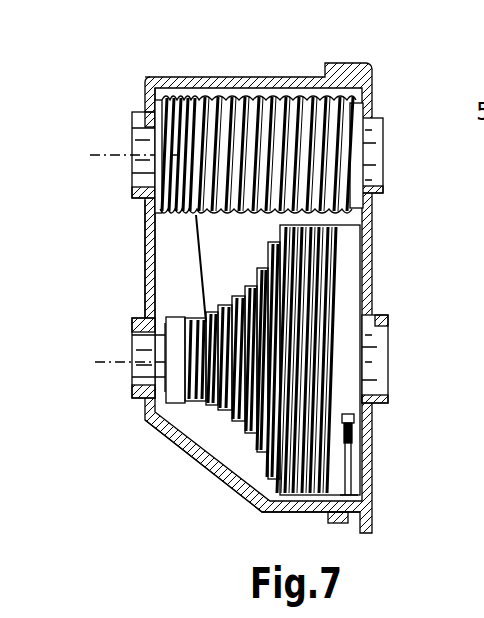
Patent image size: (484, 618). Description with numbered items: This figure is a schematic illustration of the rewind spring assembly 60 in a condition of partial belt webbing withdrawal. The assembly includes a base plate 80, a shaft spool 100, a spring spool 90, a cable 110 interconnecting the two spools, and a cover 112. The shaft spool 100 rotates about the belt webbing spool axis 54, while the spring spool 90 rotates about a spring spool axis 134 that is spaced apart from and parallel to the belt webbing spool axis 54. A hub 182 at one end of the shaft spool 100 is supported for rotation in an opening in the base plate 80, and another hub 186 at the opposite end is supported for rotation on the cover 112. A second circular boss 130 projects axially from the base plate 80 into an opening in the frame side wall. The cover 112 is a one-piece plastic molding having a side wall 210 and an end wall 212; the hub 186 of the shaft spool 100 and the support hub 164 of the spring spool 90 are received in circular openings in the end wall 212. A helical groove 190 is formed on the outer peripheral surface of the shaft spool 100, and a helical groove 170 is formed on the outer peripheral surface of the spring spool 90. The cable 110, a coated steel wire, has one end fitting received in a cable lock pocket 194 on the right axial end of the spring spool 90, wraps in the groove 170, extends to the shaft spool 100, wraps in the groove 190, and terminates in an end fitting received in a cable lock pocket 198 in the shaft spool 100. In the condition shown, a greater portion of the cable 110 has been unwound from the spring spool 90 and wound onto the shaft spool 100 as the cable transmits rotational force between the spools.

The belt webbing spool axis 54 is at (97, 163).
The rewind spring assembly 60 is at (58, 222).
The base plate 80 is at (381, 470).
The spring spool 90 is at (274, 360).
The shaft spool 100 is at (256, 106).
The cable 110 is at (202, 262).
The cover 112 is at (137, 240).
The second circular boss 130 is at (386, 400).
The spring spool axis 134 is at (106, 378).
The support hub 164 is at (141, 402).
The helical groove 170 is at (196, 403).
The hub 182 is at (376, 143).
The hub 186 is at (143, 134).
The helical groove 190 is at (230, 99).
The cable lock pocket 194 is at (354, 423).
The cable lock pocket 198 is at (151, 121).
The side wall 210 is at (223, 474).
The end wall 212 is at (147, 298).